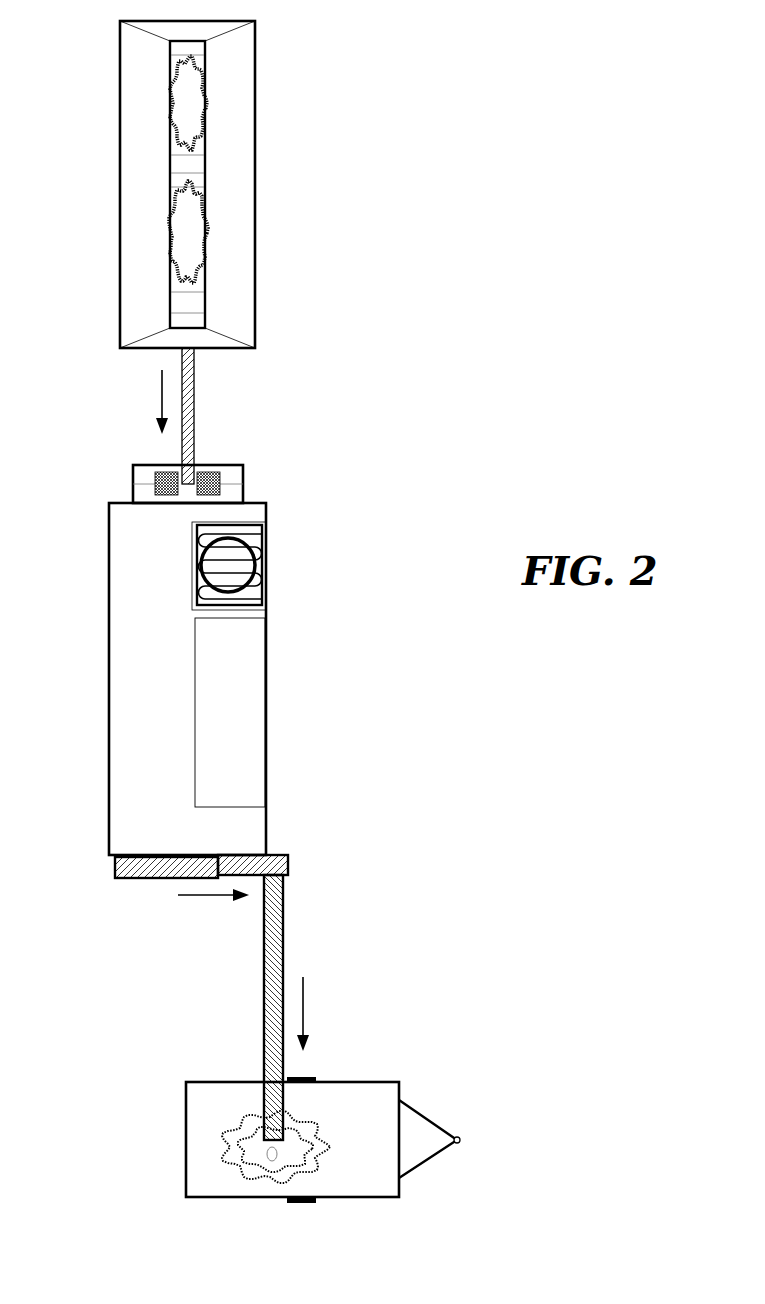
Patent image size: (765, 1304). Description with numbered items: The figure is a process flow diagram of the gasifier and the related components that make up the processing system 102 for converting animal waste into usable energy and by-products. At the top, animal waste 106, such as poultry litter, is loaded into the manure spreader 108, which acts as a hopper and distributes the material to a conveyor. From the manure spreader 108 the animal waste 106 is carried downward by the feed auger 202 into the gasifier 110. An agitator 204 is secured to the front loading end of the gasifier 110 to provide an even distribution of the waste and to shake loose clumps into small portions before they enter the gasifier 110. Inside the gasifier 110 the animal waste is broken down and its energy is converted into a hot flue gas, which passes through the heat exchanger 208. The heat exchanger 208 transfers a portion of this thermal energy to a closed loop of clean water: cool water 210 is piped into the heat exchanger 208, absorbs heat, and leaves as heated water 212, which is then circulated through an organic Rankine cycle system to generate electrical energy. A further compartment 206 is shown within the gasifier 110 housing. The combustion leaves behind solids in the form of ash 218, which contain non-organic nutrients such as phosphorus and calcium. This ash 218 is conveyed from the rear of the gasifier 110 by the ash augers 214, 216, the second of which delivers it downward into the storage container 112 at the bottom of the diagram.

The processing system 102 is at (452, 252).
The animal waste 106 is at (170, 183).
The manure spreader 108 is at (257, 108).
The gasifier 110 is at (109, 663).
The storage container 112 is at (198, 1080).
The feed auger 202 is at (195, 411).
The agitator 204 is at (222, 485).
The compartment 206 is at (250, 735).
The heat exchanger 208 is at (257, 571).
The cool water 210 is at (210, 533).
The heated water 212 is at (263, 598).
The ash auger 214 is at (170, 876).
The ash auger 216 is at (283, 960).
The ash 218 is at (240, 1153).